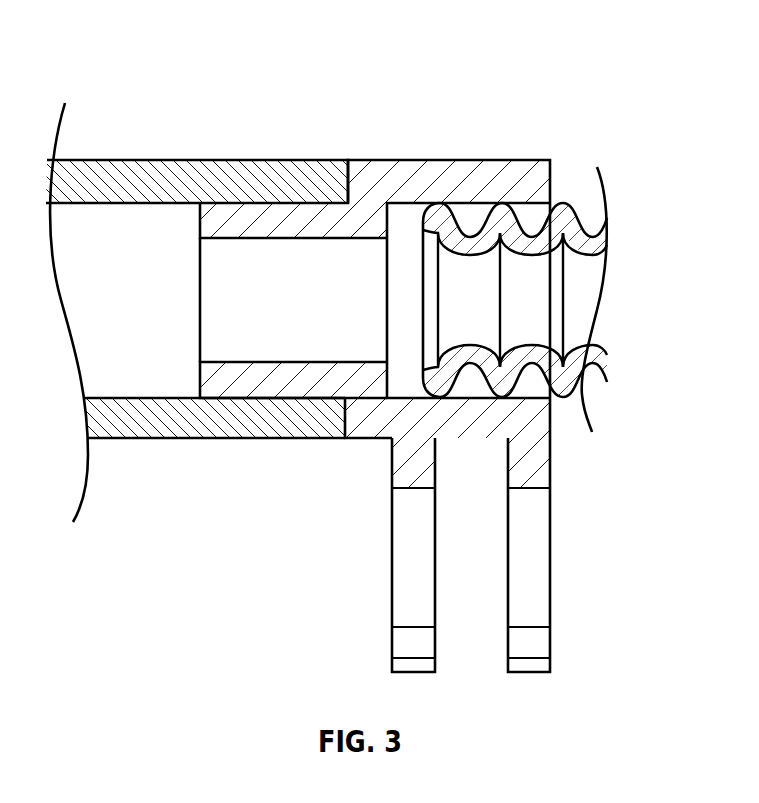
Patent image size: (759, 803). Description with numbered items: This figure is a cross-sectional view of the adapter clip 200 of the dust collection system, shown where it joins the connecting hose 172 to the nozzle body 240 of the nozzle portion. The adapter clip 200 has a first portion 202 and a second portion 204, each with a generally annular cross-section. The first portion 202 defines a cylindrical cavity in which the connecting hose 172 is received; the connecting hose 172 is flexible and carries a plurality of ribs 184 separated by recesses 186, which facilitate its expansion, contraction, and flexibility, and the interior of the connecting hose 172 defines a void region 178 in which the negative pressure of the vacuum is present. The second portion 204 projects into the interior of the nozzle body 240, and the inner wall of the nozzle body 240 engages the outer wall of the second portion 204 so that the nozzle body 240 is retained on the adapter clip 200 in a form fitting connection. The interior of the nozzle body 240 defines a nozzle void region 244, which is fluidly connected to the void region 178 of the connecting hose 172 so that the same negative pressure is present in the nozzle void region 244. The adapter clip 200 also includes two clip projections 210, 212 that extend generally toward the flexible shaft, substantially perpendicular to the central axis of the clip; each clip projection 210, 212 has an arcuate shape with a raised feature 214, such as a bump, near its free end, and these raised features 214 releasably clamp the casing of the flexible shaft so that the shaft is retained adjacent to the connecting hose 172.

The connecting hose 172 is at (563, 390).
The void region 178 is at (548, 298).
The ribs 184 is at (568, 215).
The recesses 186 is at (598, 214).
The adapter clip 200 is at (522, 118).
The first portion 202 is at (488, 182).
The second portion 204 is at (253, 380).
The clip projection 210 is at (407, 544).
The clip projection 212 is at (527, 547).
The raised feature 214 is at (408, 652).
The nozzle body 240 is at (232, 175).
The nozzle void region 244 is at (126, 265).